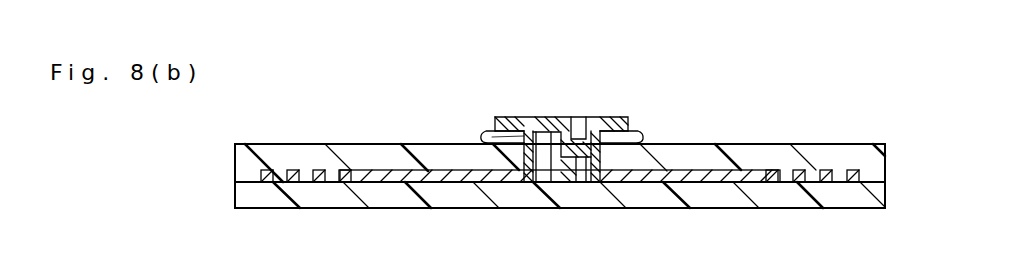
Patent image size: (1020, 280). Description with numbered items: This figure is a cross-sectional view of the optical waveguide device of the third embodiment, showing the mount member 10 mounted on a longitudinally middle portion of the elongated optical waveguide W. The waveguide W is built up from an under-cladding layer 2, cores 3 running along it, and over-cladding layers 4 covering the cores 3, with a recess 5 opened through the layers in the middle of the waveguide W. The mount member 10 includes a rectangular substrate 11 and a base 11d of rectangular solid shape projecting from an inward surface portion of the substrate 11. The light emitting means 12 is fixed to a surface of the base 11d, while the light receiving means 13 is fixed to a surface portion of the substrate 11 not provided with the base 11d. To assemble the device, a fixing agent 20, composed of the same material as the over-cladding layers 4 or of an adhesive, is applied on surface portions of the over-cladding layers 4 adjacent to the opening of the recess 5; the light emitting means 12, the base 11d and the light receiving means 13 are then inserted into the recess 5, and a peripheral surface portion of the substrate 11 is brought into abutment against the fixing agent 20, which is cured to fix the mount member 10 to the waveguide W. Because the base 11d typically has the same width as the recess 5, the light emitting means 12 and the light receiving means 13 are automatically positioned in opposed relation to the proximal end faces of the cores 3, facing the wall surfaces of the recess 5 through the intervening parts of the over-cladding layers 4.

The optical waveguide W is at (855, 142).
The under-cladding layer 2 is at (327, 200).
The cores 3 is at (357, 172).
The over-cladding layers 4 is at (425, 150).
The recess 5 is at (552, 193).
The mount member 10 is at (566, 139).
The substrate 11 is at (585, 166).
The base 11d is at (572, 183).
The light emitting means 12 is at (590, 133).
The light receiving means 13 is at (536, 130).
The fixing agent 20 is at (481, 136).